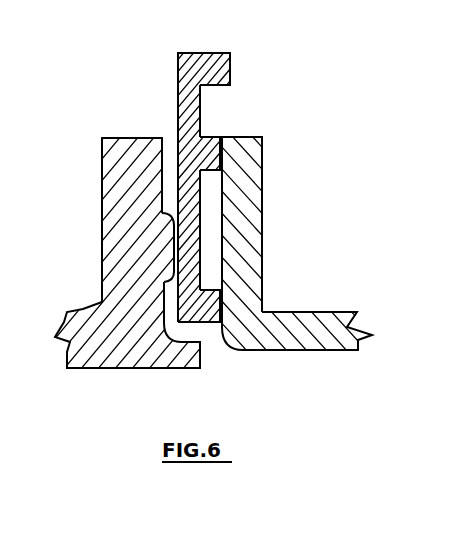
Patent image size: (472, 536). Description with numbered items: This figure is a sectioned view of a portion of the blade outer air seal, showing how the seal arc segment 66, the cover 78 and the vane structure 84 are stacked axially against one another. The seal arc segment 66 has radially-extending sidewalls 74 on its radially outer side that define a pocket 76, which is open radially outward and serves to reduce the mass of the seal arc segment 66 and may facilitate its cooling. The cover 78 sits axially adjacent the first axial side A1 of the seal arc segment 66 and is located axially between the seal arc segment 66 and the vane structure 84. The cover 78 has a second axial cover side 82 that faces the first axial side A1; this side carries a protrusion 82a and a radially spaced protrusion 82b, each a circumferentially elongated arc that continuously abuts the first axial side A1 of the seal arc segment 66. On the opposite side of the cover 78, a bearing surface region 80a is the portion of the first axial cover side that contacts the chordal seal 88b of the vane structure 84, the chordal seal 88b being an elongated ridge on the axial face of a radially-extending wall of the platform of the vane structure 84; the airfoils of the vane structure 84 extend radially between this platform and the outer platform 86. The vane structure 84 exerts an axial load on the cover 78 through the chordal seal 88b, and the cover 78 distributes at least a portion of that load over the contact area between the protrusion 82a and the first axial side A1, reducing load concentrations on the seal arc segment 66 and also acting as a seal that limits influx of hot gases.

The cover 78 is at (206, 42).
The outer platform 86 is at (178, 96).
The second axial cover side 82 is at (205, 222).
The protrusion 82a is at (207, 323).
The protrusion 82b is at (222, 157).
The first axial side A1 is at (212, 183).
The vane structure 84 is at (120, 382).
The chordal seal 88b is at (160, 213).
The bearing surface region 80a is at (176, 256).
The pocket 76 is at (312, 262).
The sidewall 74 is at (262, 229).
The seal arc segment 66 is at (305, 364).